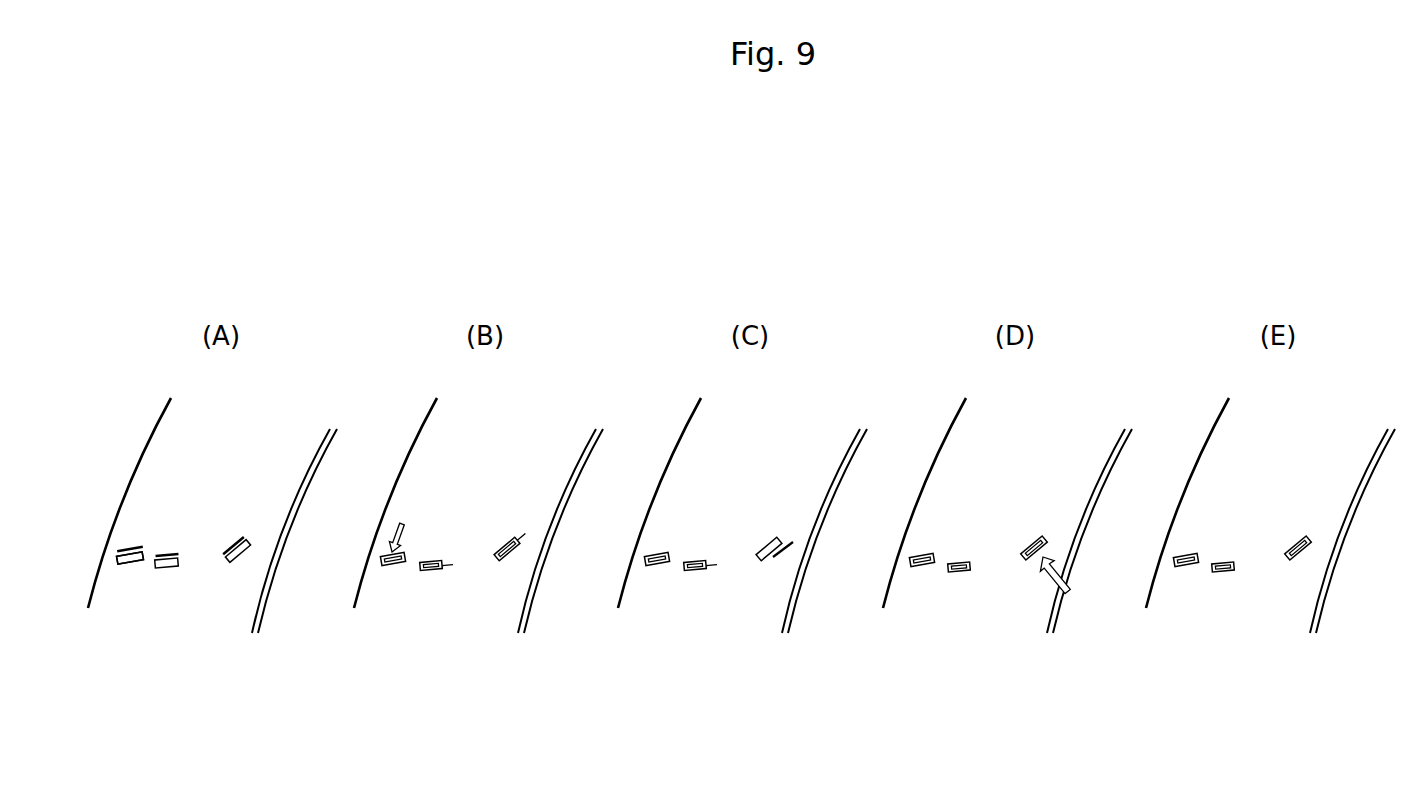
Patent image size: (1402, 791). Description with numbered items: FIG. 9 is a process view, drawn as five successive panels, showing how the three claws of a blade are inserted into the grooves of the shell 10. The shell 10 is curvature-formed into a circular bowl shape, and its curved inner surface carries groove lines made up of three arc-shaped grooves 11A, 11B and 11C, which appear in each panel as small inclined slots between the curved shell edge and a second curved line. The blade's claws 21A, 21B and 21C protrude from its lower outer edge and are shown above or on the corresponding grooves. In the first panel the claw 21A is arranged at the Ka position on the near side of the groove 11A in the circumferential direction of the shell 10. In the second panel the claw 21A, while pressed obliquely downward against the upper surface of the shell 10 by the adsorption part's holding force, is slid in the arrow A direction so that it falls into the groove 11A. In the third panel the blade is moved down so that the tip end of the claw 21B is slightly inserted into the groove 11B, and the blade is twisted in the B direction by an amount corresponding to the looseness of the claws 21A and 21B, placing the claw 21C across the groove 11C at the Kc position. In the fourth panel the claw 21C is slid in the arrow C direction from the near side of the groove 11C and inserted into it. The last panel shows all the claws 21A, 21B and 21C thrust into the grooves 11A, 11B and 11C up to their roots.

The shell 10 is at (139, 444).
The groove 11A is at (123, 566).
The groove 11B is at (164, 571).
The groove 11C is at (242, 562).
The claw 21A is at (139, 555).
The claw 21B is at (182, 565).
The claw 21C is at (242, 540).
The Ka position Ka is at (127, 550).
The Kc position Kc is at (811, 583).
The arrow A direction A is at (371, 526).
The B direction B is at (829, 518).
The arrow C direction C is at (1077, 571).